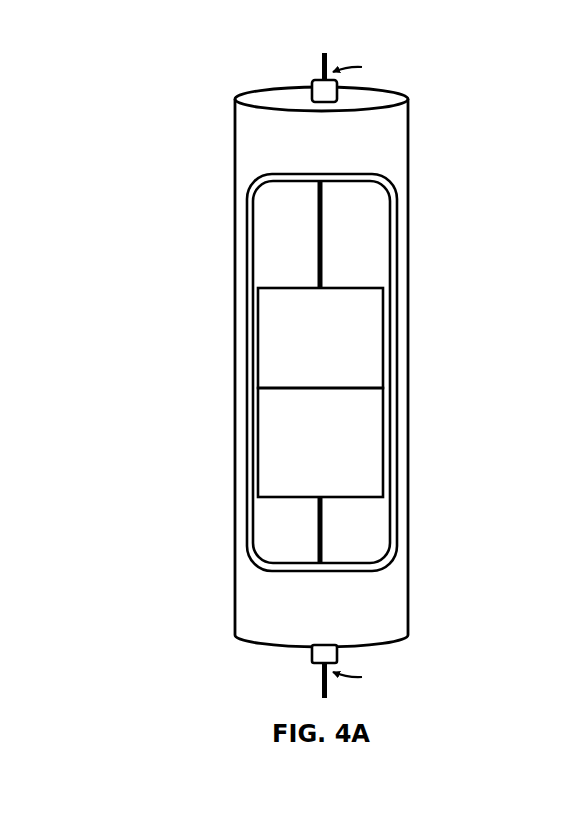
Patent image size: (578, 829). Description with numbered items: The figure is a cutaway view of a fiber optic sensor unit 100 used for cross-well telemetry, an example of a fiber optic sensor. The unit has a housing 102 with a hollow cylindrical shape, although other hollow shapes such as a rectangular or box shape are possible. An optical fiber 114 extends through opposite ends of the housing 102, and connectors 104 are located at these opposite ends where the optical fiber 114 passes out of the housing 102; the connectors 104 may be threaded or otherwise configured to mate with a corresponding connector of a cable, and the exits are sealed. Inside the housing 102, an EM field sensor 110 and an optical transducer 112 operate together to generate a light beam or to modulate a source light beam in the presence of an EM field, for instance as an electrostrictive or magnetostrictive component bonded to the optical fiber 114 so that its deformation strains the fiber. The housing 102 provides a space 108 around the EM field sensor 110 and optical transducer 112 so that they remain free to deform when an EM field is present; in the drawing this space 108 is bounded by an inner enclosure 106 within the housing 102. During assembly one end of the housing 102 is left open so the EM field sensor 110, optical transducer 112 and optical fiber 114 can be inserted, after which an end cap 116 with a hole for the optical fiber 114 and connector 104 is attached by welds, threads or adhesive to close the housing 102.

The fiber optic sensor unit 100 is at (208, 112).
The housing 102 is at (234, 154).
The connector 104 is at (310, 85).
The inner enclosure 106 is at (248, 215).
The space 108 is at (270, 259).
The EM field sensor 110 is at (258, 424).
The optical transducer 112 is at (258, 356).
The optical fiber 114 is at (320, 72).
The end cap 116 is at (382, 98).